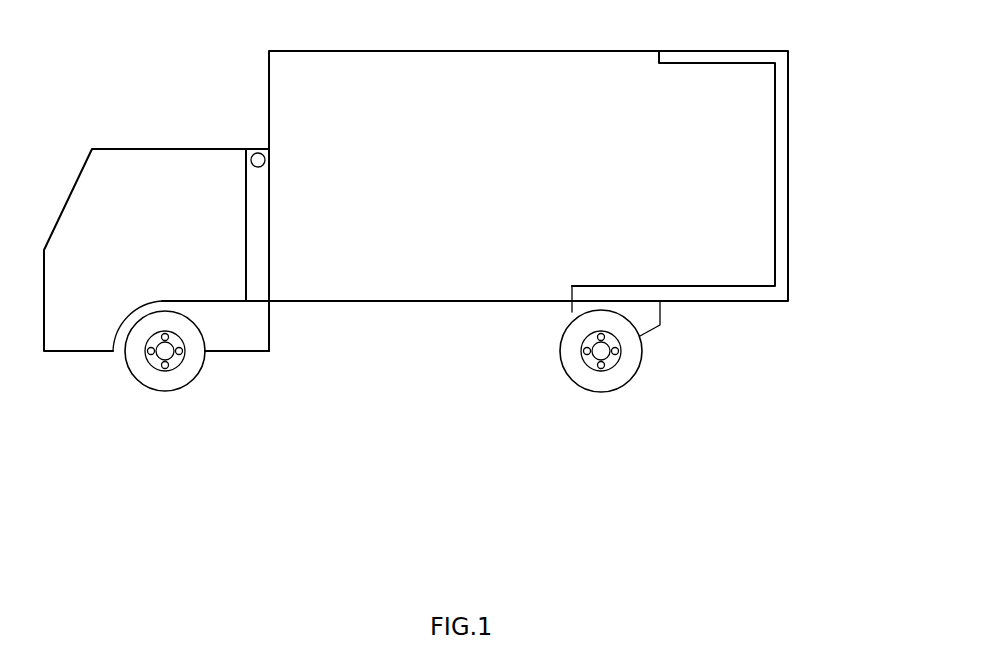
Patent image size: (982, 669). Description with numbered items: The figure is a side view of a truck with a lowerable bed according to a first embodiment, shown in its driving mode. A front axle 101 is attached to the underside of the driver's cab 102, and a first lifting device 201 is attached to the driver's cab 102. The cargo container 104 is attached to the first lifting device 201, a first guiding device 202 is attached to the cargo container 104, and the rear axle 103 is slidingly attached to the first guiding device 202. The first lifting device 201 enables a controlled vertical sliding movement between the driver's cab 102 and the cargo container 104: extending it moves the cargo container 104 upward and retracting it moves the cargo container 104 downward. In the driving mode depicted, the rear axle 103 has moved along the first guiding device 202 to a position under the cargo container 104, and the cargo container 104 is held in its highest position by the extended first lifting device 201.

The front axle 101 is at (148, 392).
The driver's cab 102 is at (112, 146).
The rear axle 103 is at (585, 392).
The cargo container 104 is at (437, 50).
The first lifting device 201 is at (257, 150).
The first guiding device 202 is at (670, 57).